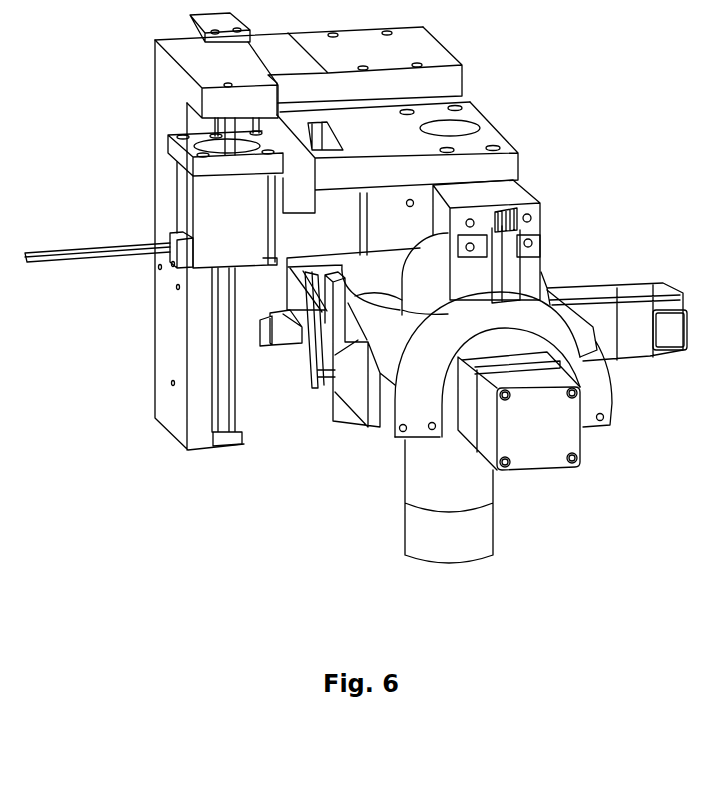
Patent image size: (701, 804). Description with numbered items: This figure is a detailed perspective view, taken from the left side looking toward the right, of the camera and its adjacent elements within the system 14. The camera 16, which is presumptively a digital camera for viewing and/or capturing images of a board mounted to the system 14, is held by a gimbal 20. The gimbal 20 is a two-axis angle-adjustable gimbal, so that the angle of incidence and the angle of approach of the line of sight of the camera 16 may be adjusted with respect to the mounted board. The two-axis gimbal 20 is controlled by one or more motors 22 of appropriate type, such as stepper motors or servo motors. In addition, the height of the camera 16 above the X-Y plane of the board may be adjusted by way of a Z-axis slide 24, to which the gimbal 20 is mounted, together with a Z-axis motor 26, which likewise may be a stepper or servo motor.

The system 14 is at (67, 591).
The camera 16 is at (400, 539).
The gimbal 20 is at (355, 417).
The motors 22 is at (548, 430).
The Z-axis slide 24 is at (203, 415).
The Z-axis motor 26 is at (232, 235).